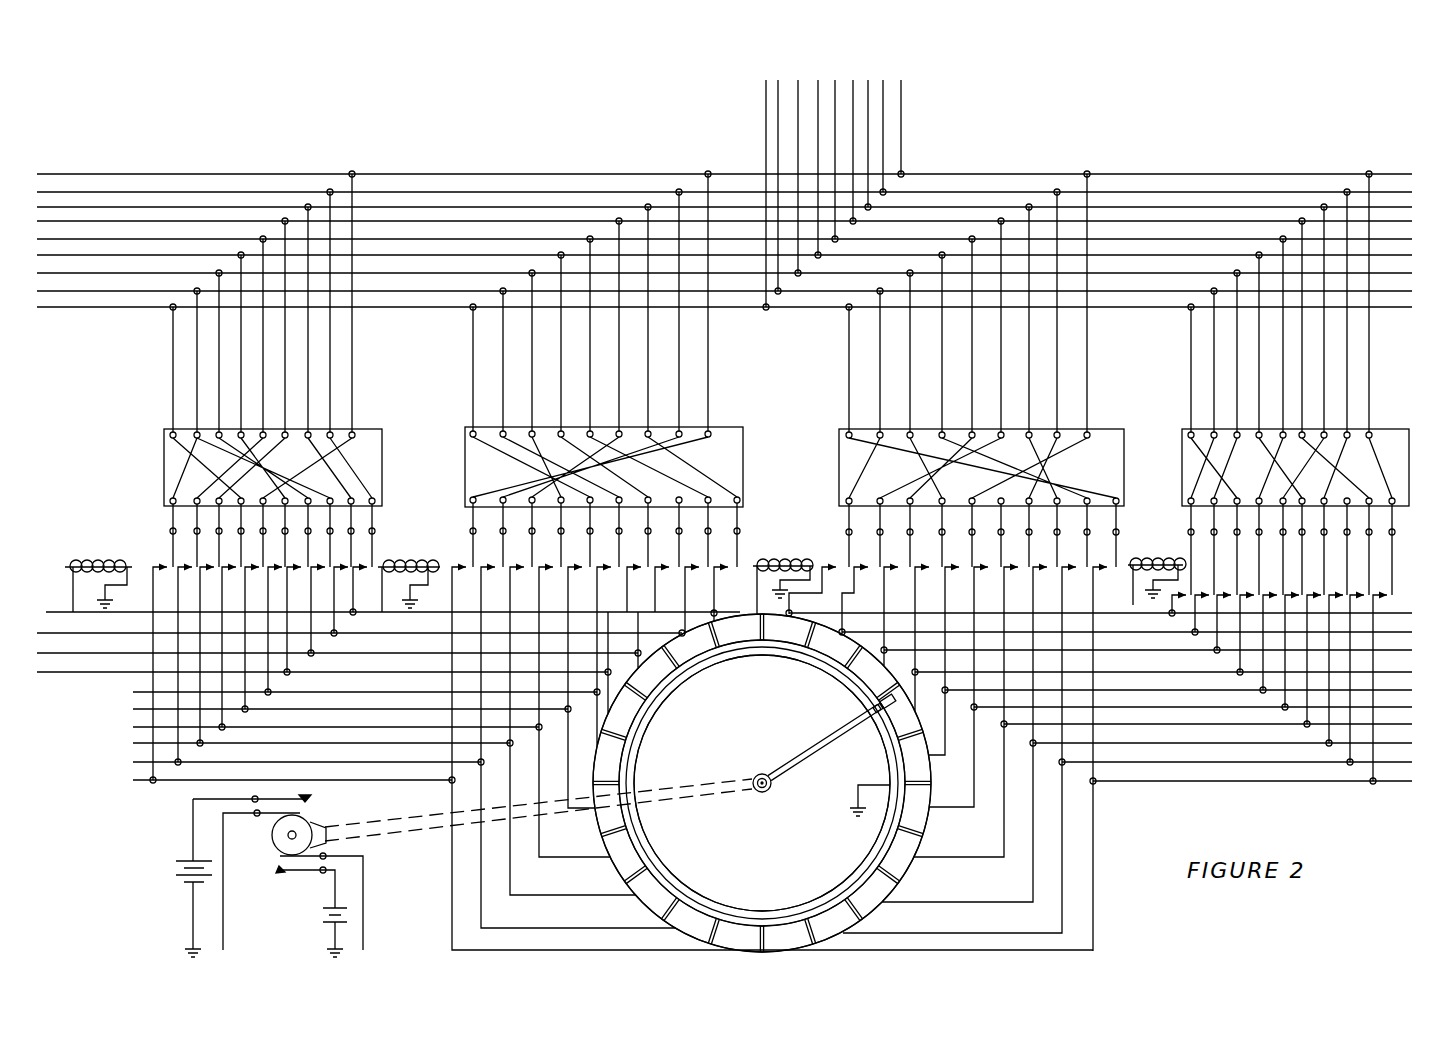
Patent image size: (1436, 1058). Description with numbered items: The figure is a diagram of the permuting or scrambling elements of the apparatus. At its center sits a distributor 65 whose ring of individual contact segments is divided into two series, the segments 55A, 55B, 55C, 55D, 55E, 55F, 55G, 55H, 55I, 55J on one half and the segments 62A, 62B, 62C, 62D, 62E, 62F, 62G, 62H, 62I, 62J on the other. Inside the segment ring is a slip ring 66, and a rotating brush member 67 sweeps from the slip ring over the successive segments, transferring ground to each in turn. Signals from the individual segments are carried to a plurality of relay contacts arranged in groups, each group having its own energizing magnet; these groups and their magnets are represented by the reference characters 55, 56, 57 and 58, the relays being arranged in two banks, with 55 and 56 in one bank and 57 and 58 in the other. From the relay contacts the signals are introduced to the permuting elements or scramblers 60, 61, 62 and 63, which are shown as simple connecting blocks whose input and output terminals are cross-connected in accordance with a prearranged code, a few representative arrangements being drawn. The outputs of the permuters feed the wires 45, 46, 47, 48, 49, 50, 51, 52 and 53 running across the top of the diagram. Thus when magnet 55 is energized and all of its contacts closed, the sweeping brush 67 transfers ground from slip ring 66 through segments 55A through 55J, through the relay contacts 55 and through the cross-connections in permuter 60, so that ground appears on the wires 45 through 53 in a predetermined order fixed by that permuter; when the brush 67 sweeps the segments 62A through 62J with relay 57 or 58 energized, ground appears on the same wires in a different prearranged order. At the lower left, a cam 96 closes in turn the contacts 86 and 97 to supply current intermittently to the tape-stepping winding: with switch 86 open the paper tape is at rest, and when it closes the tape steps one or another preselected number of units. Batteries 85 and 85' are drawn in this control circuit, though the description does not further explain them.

The wire 45 is at (901, 80).
The wire 46 is at (883, 80).
The wire 47 is at (868, 80).
The wire 48 is at (853, 80).
The wire 49 is at (835, 80).
The wire 50 is at (818, 80).
The wire 51 is at (798, 80).
The wire 52 is at (778, 80).
The wire 53 is at (766, 80).
The relay contacts and energizing magnet 55 is at (88, 564).
The relay contacts and energizing magnet 56 is at (400, 564).
The relay contacts and energizing magnet 57 is at (786, 562).
The relay contacts and energizing magnet 58 is at (1158, 553).
The permuter 60 is at (164, 482).
The permuter 61 is at (465, 482).
The permuter 62 is at (839, 478).
The permuter 63 is at (1182, 478).
The contact segment 55A is at (750, 950).
The contact segment 55B is at (697, 906).
The contact segment 55C is at (664, 882).
The contact segment 55D is at (640, 848).
The contact segment 55E is at (622, 806).
The contact segment 55F is at (622, 761).
The contact segment 55G is at (636, 719).
The contact segment 55H is at (663, 684).
The contact segment 55I is at (698, 658).
The contact segment 55J is at (741, 644).
The contact segment 62A is at (785, 644).
The contact segment 62B is at (826, 658).
The contact segment 62C is at (861, 686).
The contact segment 62D is at (888, 720).
The contact segment 62E is at (931, 758).
The contact segment 62F is at (930, 811).
The contact segment 62G is at (914, 862).
The contact segment 62H is at (883, 905).
The contact segment 62I is at (841, 936).
The contact segment 62J is at (789, 952).
The distributor 65 is at (769, 791).
The slip ring 66 is at (803, 900).
The rotating brush member 67 is at (838, 737).
The battery 85 is at (186, 878).
The battery 85' is at (261, 880).
The switch 86 is at (277, 869).
The cam 96 is at (268, 843).
The contact 97 is at (312, 800).